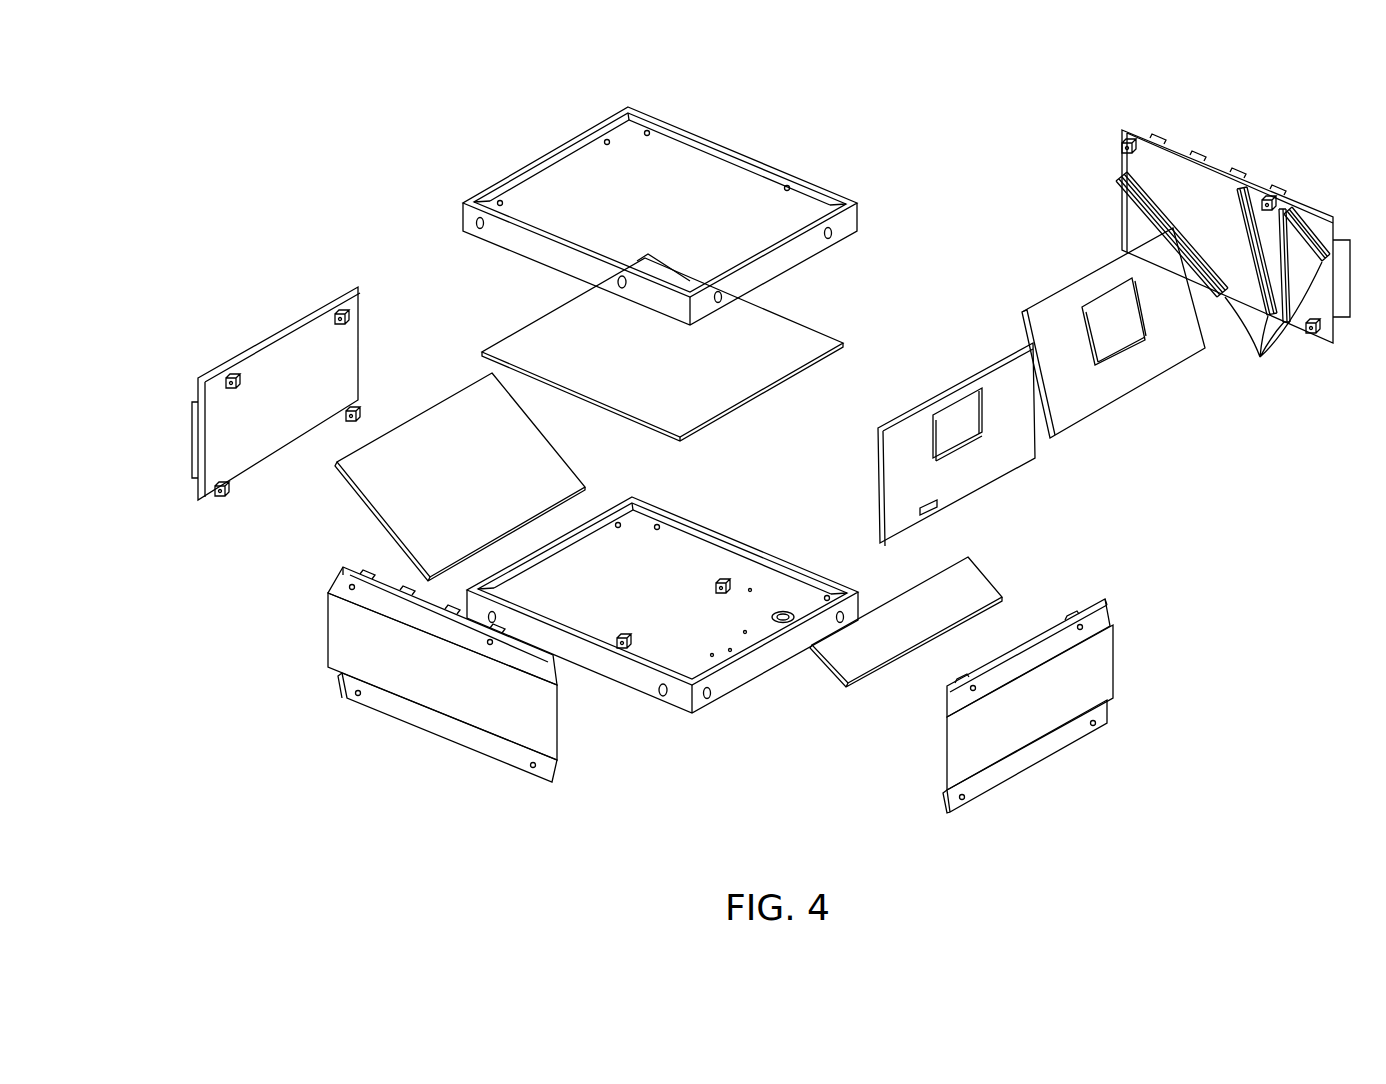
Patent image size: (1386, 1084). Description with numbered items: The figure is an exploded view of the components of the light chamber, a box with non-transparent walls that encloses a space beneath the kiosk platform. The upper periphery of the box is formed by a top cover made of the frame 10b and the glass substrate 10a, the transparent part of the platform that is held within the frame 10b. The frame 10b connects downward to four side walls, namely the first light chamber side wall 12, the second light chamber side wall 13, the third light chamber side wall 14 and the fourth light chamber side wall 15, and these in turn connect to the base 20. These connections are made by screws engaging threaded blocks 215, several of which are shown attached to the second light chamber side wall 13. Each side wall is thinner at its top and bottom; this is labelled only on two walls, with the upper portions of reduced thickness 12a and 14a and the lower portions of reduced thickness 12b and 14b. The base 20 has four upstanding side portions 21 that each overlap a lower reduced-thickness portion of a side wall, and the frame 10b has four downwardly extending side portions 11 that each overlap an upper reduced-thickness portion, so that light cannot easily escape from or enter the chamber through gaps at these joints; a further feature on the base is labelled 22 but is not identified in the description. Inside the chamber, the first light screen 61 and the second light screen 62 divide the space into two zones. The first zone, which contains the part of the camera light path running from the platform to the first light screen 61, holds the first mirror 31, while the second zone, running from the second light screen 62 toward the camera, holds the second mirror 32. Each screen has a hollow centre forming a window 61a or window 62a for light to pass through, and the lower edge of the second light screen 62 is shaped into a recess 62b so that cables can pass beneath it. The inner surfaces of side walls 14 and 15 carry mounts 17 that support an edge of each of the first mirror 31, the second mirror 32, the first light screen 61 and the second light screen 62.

The frame 10b is at (505, 150).
The downwardly extending side portions 11 is at (540, 247).
The glass substrate 10a is at (553, 343).
The first mirror 31 is at (383, 490).
The second mirror 32 is at (892, 650).
The second light chamber side wall 13 is at (218, 437).
The threaded blocks 215 is at (338, 318).
The third light chamber side wall 14 is at (365, 660).
The upper portion of reduced thickness 14a is at (400, 612).
The lower portion of reduced thickness 14b is at (445, 730).
The base 20 is at (703, 742).
The upstanding side portions 21 is at (580, 660).
The mounting ring 22 is at (783, 610).
The first light chamber side wall 12 is at (1100, 675).
The upper portion of reduced thickness 12a is at (1095, 617).
The lower portion of reduced thickness 12b is at (1045, 750).
The second light screen 62 is at (1010, 375).
The window 62a is at (952, 430).
The recess 62b is at (940, 505).
The first light screen 61 is at (1057, 320).
The window 61a is at (1108, 318).
The fourth light chamber side wall 15 is at (1200, 180).
The mounts 17 is at (1273, 325).